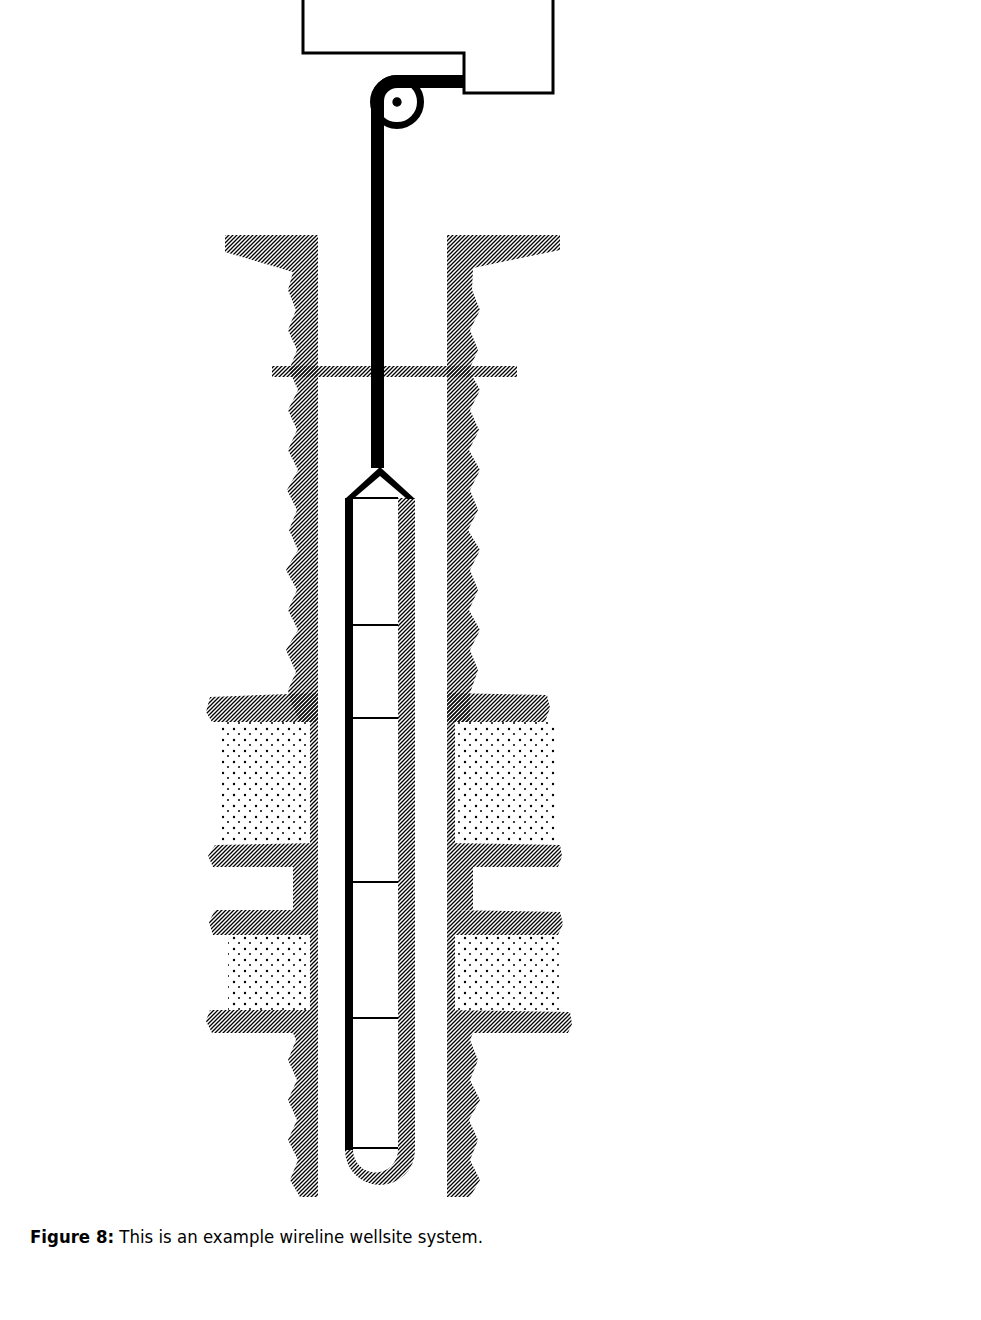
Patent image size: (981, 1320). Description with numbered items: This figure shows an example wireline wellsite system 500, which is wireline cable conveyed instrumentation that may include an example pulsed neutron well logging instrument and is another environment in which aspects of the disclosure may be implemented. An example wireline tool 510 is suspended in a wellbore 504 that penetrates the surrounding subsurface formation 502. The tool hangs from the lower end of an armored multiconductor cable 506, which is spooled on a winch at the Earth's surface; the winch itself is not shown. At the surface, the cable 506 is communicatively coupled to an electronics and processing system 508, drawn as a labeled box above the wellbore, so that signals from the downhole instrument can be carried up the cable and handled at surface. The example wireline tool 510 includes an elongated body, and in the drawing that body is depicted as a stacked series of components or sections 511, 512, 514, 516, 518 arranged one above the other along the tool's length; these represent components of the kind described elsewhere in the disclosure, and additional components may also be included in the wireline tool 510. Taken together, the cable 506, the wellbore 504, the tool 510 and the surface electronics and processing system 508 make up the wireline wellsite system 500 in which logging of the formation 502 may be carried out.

The wireline wellsite system 500 is at (188, 104).
The subterranean formation 502 is at (493, 808).
The wellbore 504 is at (410, 427).
The armored multiconductor cable 506 is at (385, 297).
The electronics and processing system 508 is at (521, 40).
The wireline tool 510 is at (369, 826).
The tool module 511 is at (385, 558).
The tool module 512 is at (385, 666).
The tool module 514 is at (385, 805).
The tool module 516 is at (385, 952).
The tool module 518 is at (385, 1085).